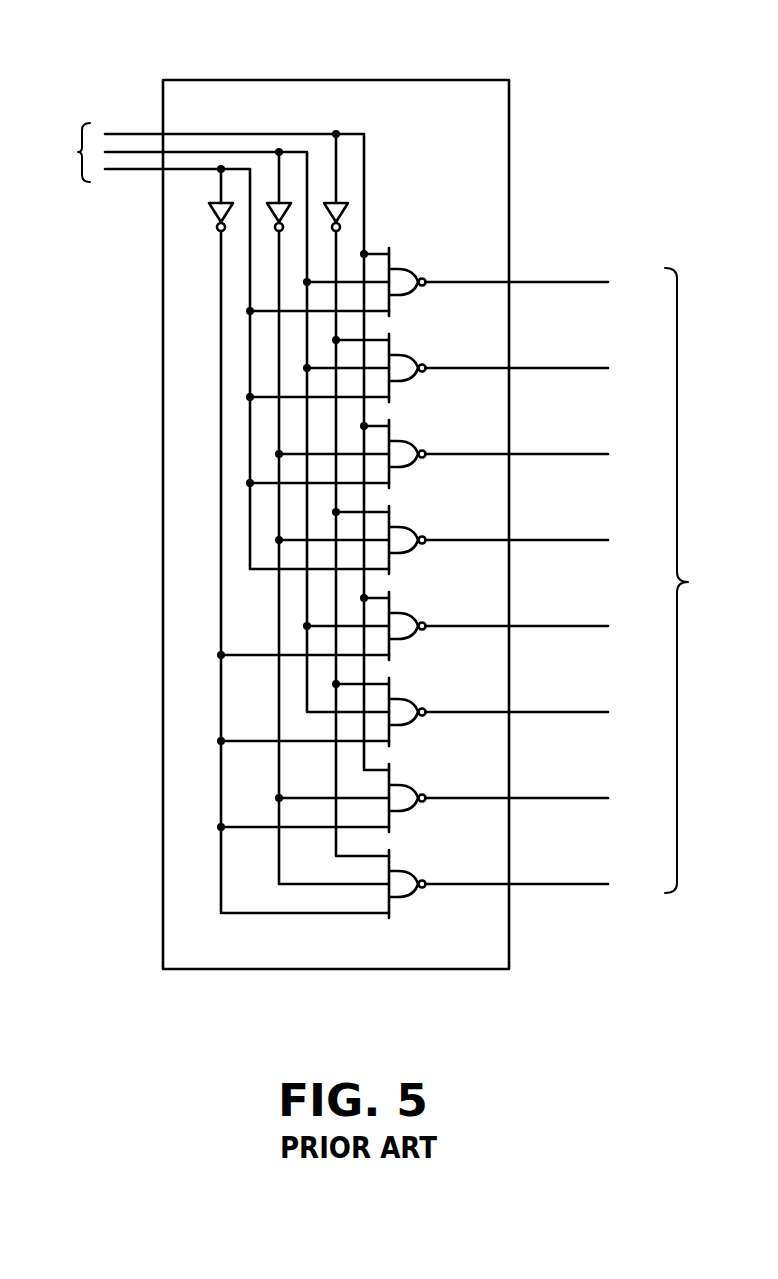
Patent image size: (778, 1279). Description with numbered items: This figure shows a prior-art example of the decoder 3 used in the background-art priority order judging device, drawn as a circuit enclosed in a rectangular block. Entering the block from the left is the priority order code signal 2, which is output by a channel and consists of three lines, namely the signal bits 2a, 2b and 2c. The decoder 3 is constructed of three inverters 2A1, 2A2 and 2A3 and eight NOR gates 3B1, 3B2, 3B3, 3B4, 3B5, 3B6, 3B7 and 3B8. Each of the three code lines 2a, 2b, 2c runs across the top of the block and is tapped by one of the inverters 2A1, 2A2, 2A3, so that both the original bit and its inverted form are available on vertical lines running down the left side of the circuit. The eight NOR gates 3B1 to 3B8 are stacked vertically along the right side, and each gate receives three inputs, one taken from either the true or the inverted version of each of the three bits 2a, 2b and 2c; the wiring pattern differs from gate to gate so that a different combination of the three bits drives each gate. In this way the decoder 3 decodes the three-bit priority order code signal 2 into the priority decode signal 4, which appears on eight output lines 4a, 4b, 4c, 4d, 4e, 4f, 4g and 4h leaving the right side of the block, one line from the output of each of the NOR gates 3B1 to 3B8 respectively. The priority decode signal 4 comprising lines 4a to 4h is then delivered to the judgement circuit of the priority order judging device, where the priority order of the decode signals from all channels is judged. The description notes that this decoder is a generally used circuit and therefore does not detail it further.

The priority order code signal 2 is at (223, 407).
The priority order code signal bit 2a is at (110, 133).
The priority order code signal bit 2b is at (127, 150).
The priority order code signal bit 2c is at (148, 168).
The inverter 2A1 is at (345, 213).
The inverter 2A2 is at (278, 218).
The inverter 2A3 is at (212, 209).
The decoder 3 is at (329, 78).
The NOR gate 3B1 is at (410, 268).
The NOR gate 3B2 is at (410, 354).
The NOR gate 3B3 is at (410, 440).
The NOR gate 3B4 is at (410, 526).
The NOR gate 3B5 is at (410, 612).
The NOR gate 3B6 is at (410, 698).
The NOR gate 3B7 is at (410, 784).
The NOR gate 3B8 is at (410, 870).
The priority decode signal 4 is at (569, 558).
The priority decode signal line 4a is at (595, 280).
The priority decode signal line 4b is at (595, 366).
The priority decode signal line 4c is at (595, 452).
The priority decode signal line 4d is at (595, 538).
The priority decode signal line 4e is at (595, 624).
The priority decode signal line 4f is at (595, 710).
The priority decode signal line 4g is at (595, 796).
The priority decode signal line 4h is at (595, 882).